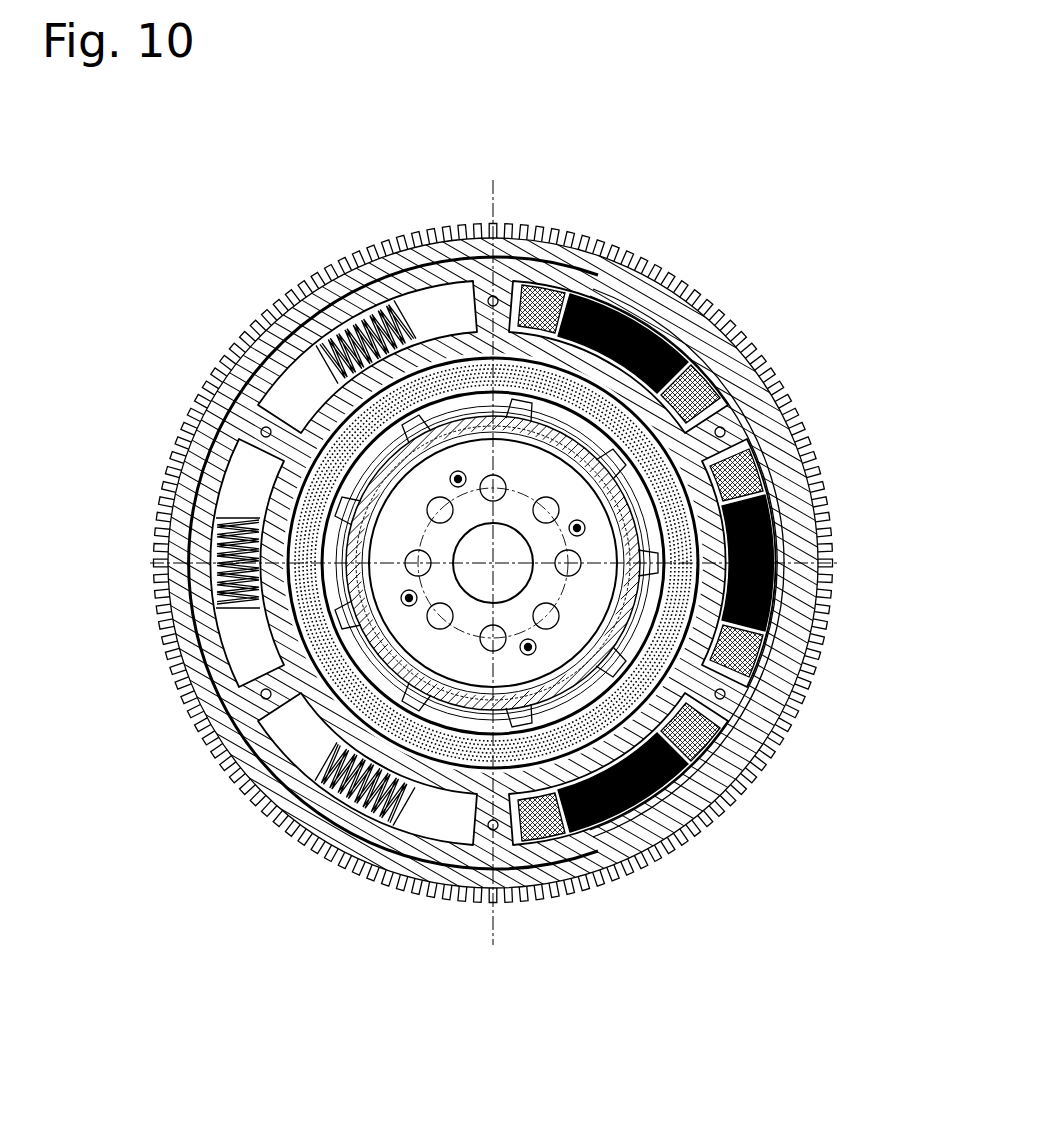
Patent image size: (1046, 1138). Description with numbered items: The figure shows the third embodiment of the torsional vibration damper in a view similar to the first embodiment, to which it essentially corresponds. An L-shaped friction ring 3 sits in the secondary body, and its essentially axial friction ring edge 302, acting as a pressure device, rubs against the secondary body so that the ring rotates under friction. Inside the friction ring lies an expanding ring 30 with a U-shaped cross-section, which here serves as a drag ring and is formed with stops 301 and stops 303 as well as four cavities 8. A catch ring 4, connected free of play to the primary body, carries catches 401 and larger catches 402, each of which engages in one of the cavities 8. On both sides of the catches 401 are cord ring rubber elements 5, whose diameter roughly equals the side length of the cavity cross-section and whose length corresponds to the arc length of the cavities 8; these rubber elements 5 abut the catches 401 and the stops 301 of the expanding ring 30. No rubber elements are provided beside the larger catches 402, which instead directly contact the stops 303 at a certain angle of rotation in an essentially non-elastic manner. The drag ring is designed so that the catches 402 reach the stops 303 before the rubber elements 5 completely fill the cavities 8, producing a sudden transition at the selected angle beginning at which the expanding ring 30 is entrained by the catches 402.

The friction ring 3 is at (307, 283).
The catch ring 4 is at (745, 795).
The rubber elements 5 is at (262, 358).
The cavities 8 is at (412, 840).
The expanding ring 30 is at (455, 830).
The stops 301 is at (350, 247).
The friction ring edge 302 is at (352, 830).
The stops 303 is at (280, 622).
The catches 401 is at (280, 430).
The catches 402 is at (273, 730).